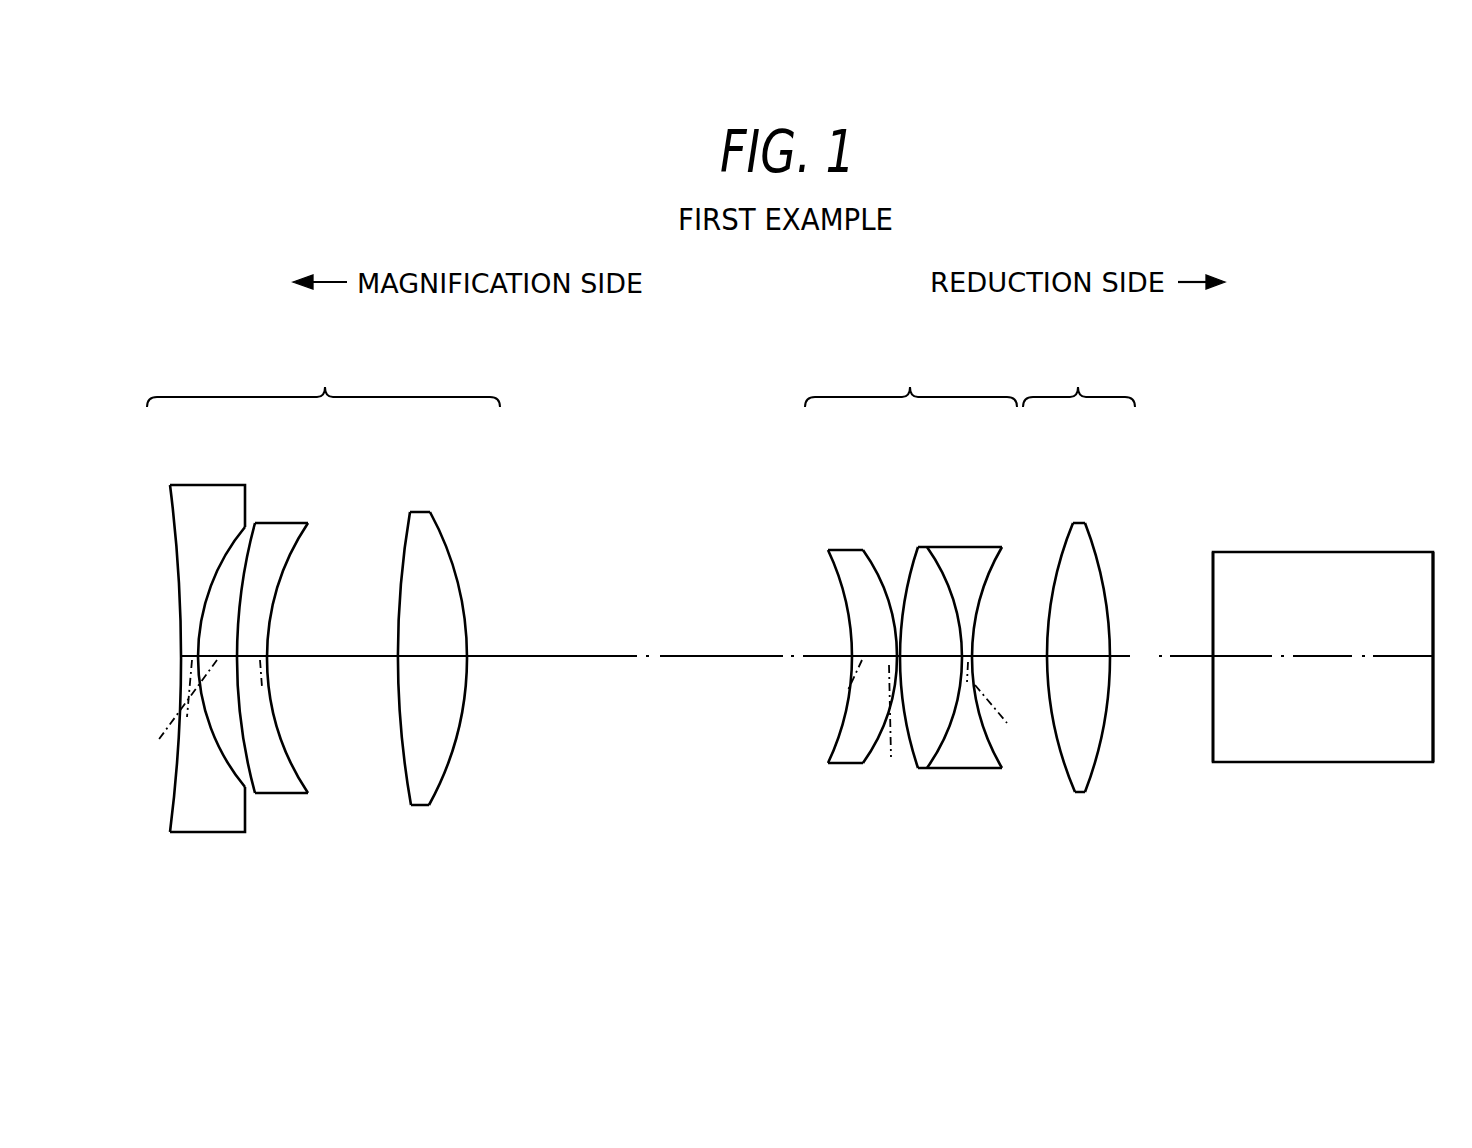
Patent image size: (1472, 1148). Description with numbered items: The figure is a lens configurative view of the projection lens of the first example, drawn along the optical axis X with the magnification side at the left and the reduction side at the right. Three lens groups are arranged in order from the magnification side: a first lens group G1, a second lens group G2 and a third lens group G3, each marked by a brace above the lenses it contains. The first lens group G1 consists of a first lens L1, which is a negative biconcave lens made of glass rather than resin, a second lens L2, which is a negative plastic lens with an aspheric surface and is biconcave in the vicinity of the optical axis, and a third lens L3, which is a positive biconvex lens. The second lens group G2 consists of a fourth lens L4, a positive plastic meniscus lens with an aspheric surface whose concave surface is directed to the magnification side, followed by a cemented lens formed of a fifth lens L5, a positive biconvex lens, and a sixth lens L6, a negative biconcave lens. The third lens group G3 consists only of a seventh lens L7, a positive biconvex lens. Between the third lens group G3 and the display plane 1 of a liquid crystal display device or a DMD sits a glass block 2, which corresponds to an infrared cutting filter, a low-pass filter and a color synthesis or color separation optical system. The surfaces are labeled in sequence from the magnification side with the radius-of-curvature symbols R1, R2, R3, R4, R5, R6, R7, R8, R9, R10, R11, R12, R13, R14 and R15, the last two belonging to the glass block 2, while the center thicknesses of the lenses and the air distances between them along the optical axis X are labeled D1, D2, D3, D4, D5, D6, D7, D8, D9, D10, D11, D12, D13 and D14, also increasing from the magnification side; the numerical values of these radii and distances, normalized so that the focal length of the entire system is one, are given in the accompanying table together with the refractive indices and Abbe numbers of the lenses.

The optical axis X is at (578, 652).
The first lens group G1 is at (315, 630).
The second lens group G2 is at (920, 608).
The third lens group G3 is at (1099, 608).
The first lens L1 is at (222, 822).
The second lens L2 is at (280, 780).
The third lens L3 is at (422, 797).
The fourth lens L4 is at (850, 757).
The fifth lens L5 is at (923, 743).
The sixth lens L6 is at (970, 753).
The seventh lens L7 is at (1077, 782).
The radius of curvature of lens surface R1 is at (178, 644).
The radius of curvature of lens surface R2 is at (207, 606).
The radius of curvature of lens surface R3 is at (236, 648).
The radius of curvature of lens surface R4 is at (270, 645).
The radius of curvature of lens surface R5 is at (398, 617).
The radius of curvature of lens surface R6 is at (460, 602).
The radius of curvature of lens surface R7 is at (850, 647).
The radius of curvature of lens surface R8 is at (902, 613).
The radius of curvature of lens surface R9 is at (903, 575).
The radius of curvature of lens surface R10 is at (955, 580).
The radius of curvature of lens surface R11 is at (977, 633).
The radius of curvature of lens surface R12 is at (1052, 580).
The radius of curvature of lens surface R13 is at (1110, 623).
The radius of curvature of lens surface R14 is at (1212, 570).
The radius of curvature of lens surface R15 is at (1435, 577).
The center thickness or air distance D1 is at (162, 688).
The center thickness or air distance D2 is at (175, 720).
The center thickness or air distance D3 is at (293, 687).
The center thickness or air distance D4 is at (359, 676).
The center thickness or air distance D5 is at (432, 677).
The center thickness or air distance D6 is at (721, 677).
The center thickness or air distance D7 is at (833, 684).
The center thickness or air distance D8 is at (901, 730).
The center thickness or air distance D9 is at (931, 676).
The center thickness or air distance D10 is at (1015, 721).
The center thickness or air distance D11 is at (1007, 677).
The center thickness or air distance D12 is at (1081, 676).
The center thickness or air distance D13 is at (1155, 676).
The center thickness or air distance D14 is at (1279, 676).
The display plane 1 is at (1435, 737).
The glass block 2 is at (1322, 757).